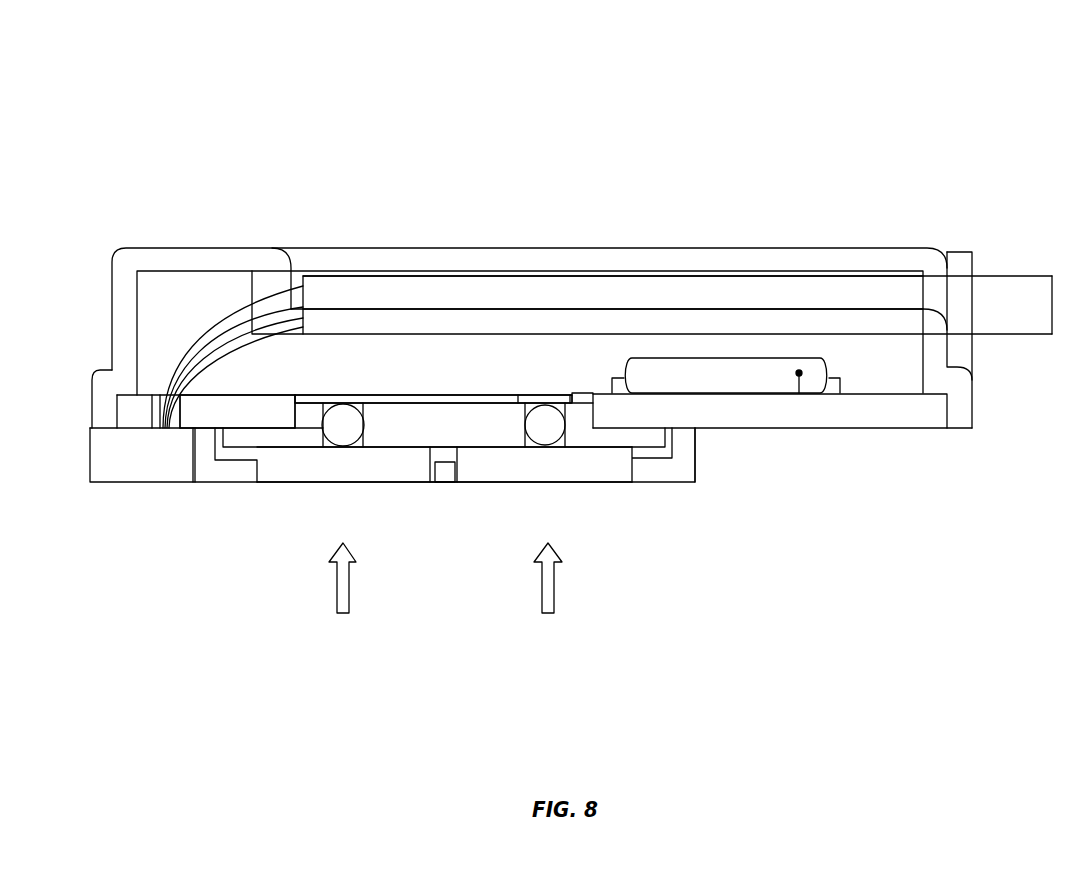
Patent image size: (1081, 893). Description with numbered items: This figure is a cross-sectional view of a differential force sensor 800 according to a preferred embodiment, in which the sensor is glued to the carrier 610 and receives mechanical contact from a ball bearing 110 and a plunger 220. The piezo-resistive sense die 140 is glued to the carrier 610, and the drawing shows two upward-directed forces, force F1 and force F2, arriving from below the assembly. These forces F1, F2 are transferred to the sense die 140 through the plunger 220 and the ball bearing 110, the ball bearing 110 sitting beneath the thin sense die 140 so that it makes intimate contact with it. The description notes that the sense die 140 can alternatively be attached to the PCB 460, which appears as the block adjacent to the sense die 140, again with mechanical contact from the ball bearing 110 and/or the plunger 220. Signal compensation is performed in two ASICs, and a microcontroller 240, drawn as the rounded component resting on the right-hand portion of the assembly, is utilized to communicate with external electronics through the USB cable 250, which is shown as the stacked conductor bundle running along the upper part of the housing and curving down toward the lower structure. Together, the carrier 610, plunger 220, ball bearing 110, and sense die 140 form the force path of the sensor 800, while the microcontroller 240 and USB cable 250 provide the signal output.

The differential force sensor 800 is at (170, 81).
The USB cable 250 is at (595, 290).
The microcontroller 240 is at (813, 366).
The PCB 460 is at (235, 407).
The piezo-resistive sense die 140 is at (328, 394).
The ball bearing 110 is at (350, 412).
The plunger 220 is at (327, 466).
The carrier 610 is at (408, 428).
The force F1 is at (342, 597).
The force F2 is at (548, 597).